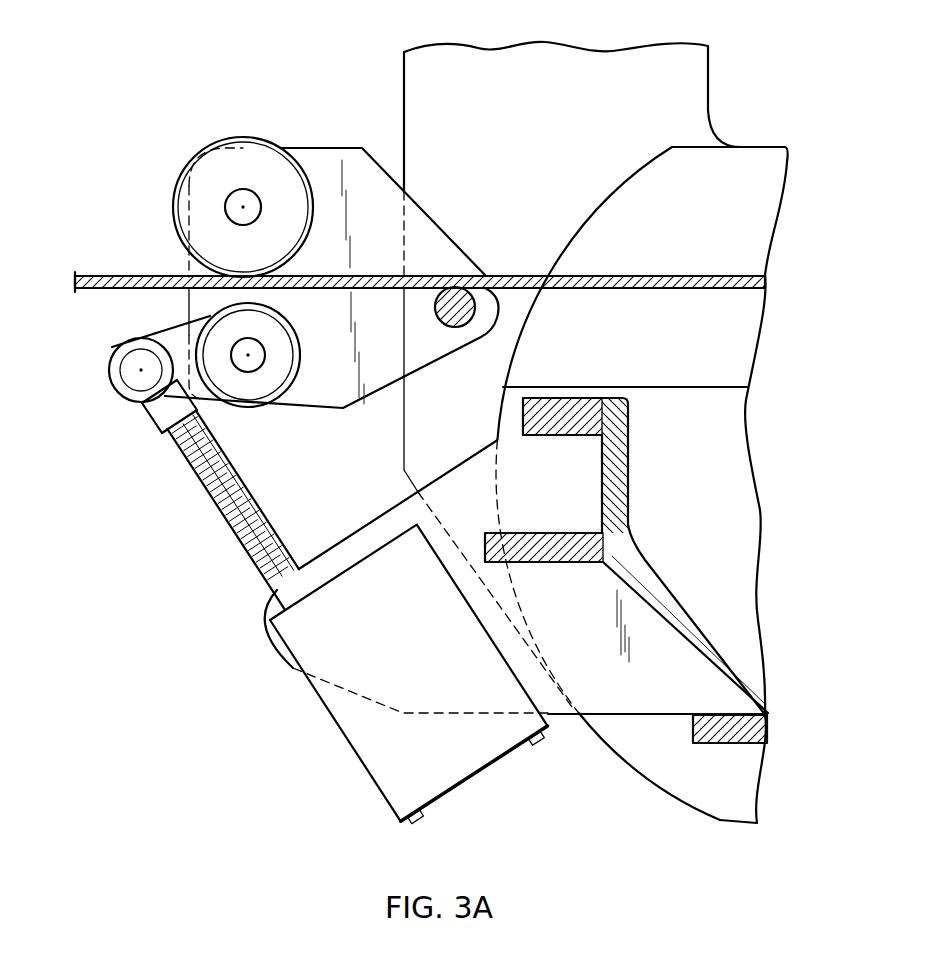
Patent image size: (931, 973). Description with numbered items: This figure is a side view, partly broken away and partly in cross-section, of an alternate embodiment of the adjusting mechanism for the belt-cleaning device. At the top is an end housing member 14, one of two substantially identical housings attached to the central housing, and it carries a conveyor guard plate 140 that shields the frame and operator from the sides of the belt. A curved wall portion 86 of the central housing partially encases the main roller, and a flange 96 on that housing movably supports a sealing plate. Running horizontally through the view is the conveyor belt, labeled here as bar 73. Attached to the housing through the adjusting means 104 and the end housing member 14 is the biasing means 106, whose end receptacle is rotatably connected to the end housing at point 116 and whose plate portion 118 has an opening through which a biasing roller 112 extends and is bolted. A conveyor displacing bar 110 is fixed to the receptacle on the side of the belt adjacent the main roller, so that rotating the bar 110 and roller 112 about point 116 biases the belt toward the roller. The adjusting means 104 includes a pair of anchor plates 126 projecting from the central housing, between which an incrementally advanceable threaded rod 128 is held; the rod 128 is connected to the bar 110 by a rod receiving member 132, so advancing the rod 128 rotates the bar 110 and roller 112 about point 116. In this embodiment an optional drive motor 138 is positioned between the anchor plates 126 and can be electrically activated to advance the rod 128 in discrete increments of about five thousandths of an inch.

The end housing member 14 is at (413, 76).
The guide bar 73 is at (100, 276).
The curved wall portion 86 is at (672, 598).
The flange 96 is at (584, 398).
The adjusting means 104 is at (248, 603).
The biasing means 106 is at (244, 78).
The conveyor displacing member or bar 110 is at (255, 385).
The roller 112 is at (207, 190).
The point 116 is at (474, 282).
The plate portion 118 is at (330, 160).
The anchor plates 126 is at (355, 537).
The threaded rod 128 is at (210, 488).
The rod receiving member 132 is at (170, 437).
The drive motor 138 is at (390, 770).
The conveyor guard plate 140 is at (740, 168).